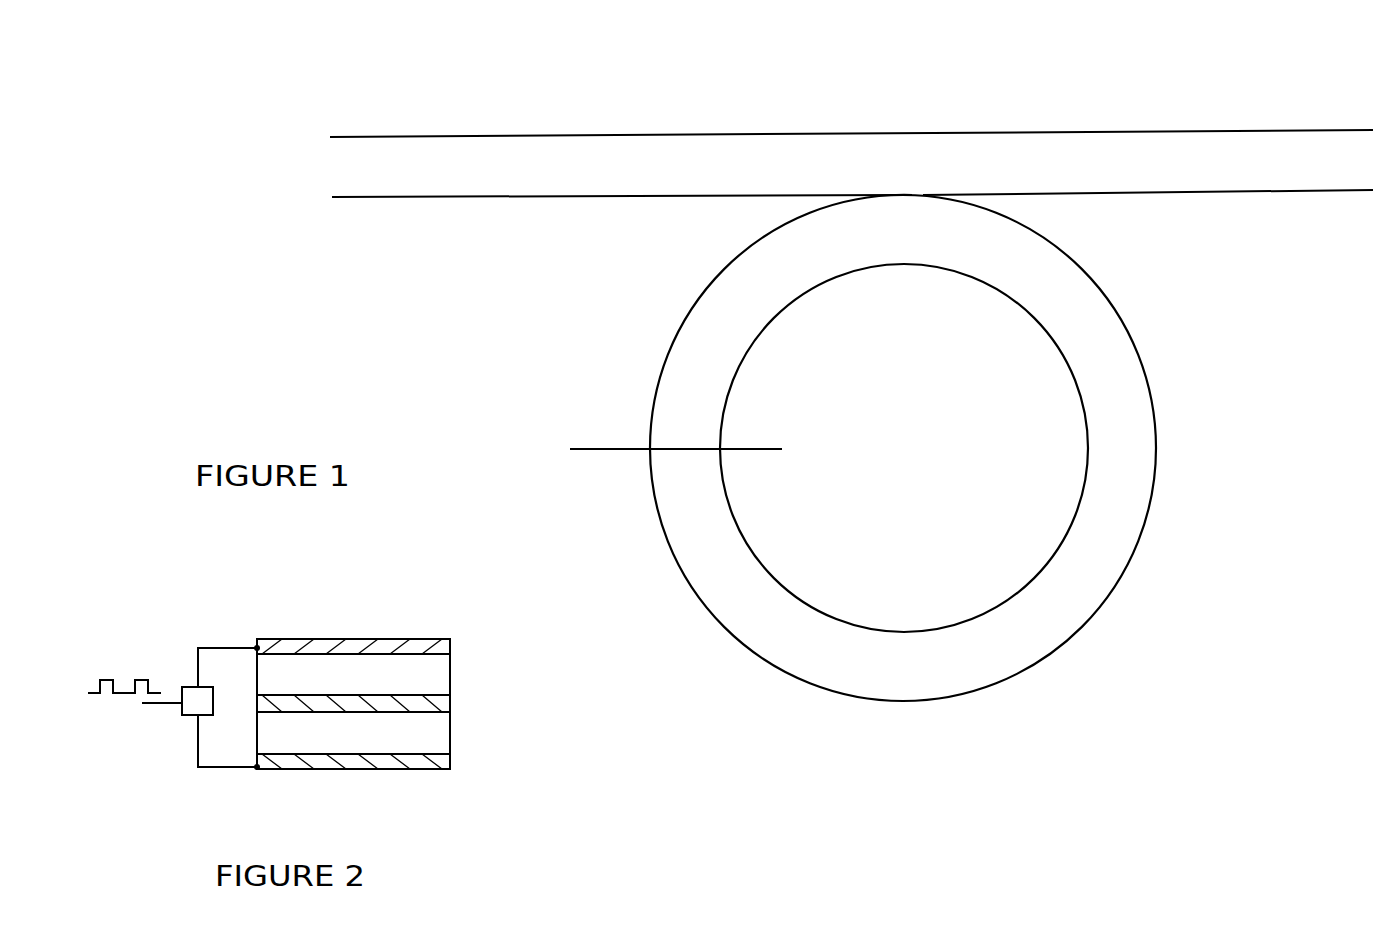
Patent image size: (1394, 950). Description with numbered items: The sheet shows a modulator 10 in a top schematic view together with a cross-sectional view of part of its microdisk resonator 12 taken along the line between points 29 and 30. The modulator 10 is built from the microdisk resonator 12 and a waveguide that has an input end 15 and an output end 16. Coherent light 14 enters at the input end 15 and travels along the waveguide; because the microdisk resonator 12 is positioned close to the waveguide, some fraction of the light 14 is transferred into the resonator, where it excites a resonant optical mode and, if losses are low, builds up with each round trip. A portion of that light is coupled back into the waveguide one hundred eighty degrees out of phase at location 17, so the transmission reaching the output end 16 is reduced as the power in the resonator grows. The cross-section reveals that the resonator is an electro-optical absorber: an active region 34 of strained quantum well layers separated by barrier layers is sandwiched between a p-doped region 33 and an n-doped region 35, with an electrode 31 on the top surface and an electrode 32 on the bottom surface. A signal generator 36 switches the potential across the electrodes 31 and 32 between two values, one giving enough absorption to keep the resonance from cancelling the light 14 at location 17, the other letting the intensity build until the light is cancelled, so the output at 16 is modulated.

In FIG. 1, the modulator 10 is at (294, 111).
In FIG. 1, the microdisk resonator 12 is at (1133, 349).
In FIG. 1, the coherent light 14 is at (490, 152).
In FIG. 1, the input end 15 is at (347, 196).
In FIG. 1, the output end 16 is at (1352, 192).
In FIG. 1, the location 17 is at (900, 193).
In FIG. 1, the line end 29 is at (597, 440).
In FIG. 1, the line end 30 is at (764, 440).
In FIG. 2, the electrode 31 is at (396, 650).
In FIG. 2, the electrode 32 is at (433, 760).
In FIG. 2, the p-doped region 33 is at (443, 665).
In FIG. 2, the active region 34 is at (450, 703).
In FIG. 2, the n-doped region 35 is at (445, 743).
In FIG. 2, the signal generator 36 is at (190, 690).